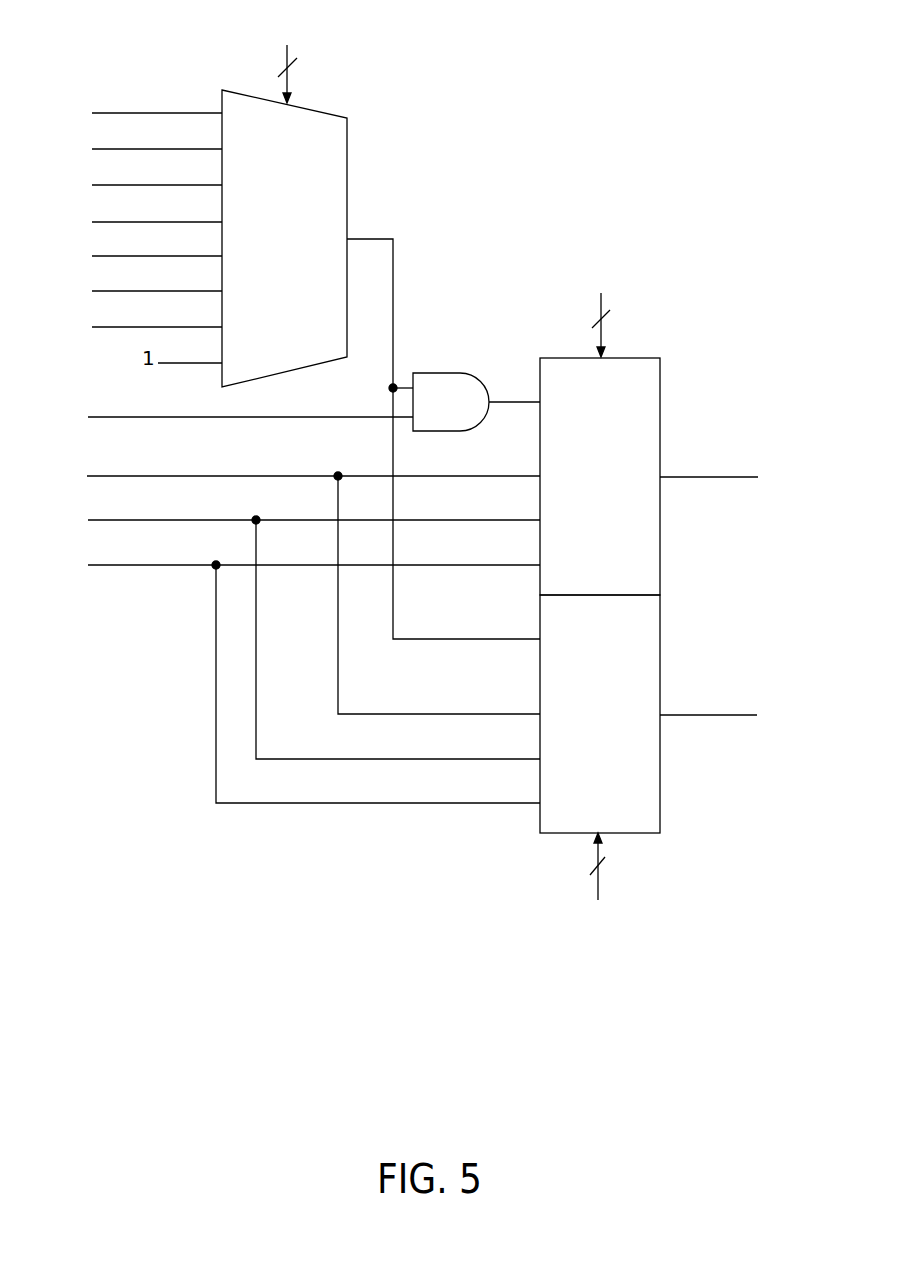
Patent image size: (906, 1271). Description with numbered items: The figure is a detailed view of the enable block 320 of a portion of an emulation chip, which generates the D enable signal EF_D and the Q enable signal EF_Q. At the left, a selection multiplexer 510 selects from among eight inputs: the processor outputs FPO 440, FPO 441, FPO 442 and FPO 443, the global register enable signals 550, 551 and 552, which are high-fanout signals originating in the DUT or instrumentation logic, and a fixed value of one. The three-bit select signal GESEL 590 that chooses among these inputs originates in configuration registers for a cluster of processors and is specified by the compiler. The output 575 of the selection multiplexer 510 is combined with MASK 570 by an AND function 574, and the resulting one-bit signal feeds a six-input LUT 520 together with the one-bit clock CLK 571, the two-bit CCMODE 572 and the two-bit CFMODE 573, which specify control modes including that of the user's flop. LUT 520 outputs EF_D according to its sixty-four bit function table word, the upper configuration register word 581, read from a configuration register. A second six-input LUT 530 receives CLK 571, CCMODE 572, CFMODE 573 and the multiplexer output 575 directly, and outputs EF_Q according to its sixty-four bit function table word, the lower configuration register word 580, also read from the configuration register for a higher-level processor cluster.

The enable block 320 is at (420, 485).
The selection multiplexer 510 is at (381, 364).
The GESEL[2:0] select signal 590 is at (286, 58).
The FPO 440 is at (149, 99).
The FPO 441 is at (149, 135).
The FPO 442 is at (149, 170).
The FPO 443 is at (149, 208).
The global register enable signal 550 is at (151, 242).
The global register enable signal 551 is at (151, 277).
The global register enable signal 552 is at (151, 312).
The AND function 574 is at (464, 402).
The MASK signal 570 is at (244, 404).
The CLK signal 571 is at (312, 582).
The CCMODE signal 572 is at (298, 626).
The CFMODE signal 573 is at (298, 670).
The output of selection multiplexer 575 is at (466, 624).
The six-input LUT 520 is at (649, 476).
The second six-input LUT 530 is at (648, 714).
The CONFIG_REG[127:64] 581 is at (599, 310).
The CONFIG_REG[63:0] 580 is at (596, 880).